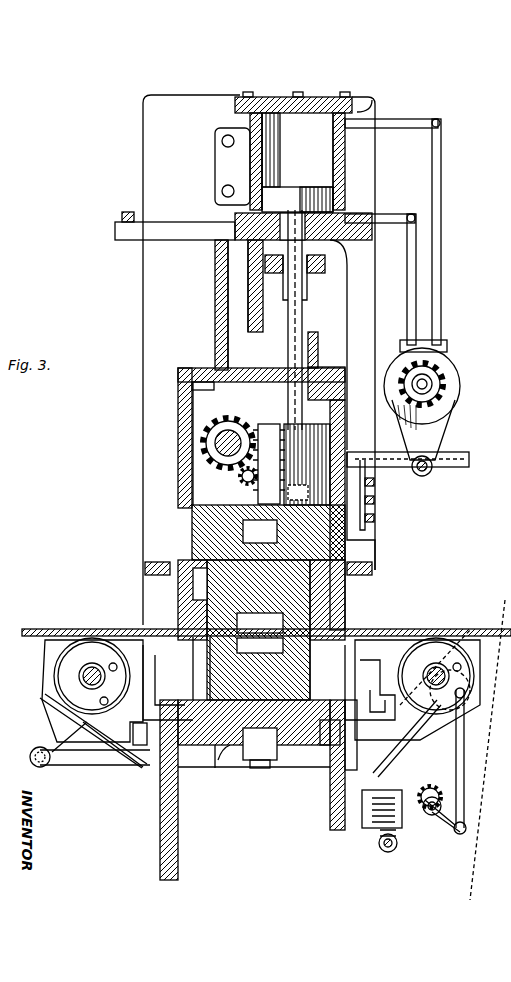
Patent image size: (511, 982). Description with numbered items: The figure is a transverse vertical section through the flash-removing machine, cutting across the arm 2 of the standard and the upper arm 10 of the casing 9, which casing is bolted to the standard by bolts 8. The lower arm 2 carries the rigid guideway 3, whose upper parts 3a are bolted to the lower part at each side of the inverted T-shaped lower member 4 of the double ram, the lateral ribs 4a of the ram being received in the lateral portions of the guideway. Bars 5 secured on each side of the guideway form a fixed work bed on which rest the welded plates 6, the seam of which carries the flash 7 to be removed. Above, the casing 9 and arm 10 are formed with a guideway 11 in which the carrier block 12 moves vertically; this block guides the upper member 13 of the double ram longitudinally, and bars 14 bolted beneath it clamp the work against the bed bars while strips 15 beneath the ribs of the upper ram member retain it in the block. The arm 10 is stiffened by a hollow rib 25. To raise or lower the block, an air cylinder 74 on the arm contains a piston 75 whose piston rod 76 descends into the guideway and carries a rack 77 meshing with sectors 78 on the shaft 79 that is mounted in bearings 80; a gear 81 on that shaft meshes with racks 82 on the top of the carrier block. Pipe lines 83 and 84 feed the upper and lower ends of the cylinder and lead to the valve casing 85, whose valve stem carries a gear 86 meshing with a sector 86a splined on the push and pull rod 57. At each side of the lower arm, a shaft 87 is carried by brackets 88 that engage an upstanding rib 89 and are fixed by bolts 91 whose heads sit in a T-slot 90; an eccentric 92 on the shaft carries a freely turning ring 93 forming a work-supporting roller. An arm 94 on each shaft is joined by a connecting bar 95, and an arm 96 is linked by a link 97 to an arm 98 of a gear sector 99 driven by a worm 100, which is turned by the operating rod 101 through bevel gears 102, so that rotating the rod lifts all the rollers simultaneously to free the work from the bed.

The arm 2 is at (160, 824).
The guideway 3 is at (220, 753).
The upper parts of the guideway 3a is at (178, 668).
The lower member of the double ram 4 is at (268, 727).
The lateral ribs 4a is at (220, 745).
The bars 5 is at (160, 647).
The plates 6 is at (492, 631).
The flash 7 is at (360, 625).
The bolts 8 is at (150, 562).
The casing 9 is at (143, 286).
The arm 10 is at (193, 449).
The guideway 11 is at (190, 492).
The carrier block 12 is at (200, 520).
The upper member of the double ram 13 is at (300, 555).
The bars 14 is at (200, 620).
The strips 15 is at (190, 598).
The hollow rib 25 is at (218, 314).
The push and pull rod 57 is at (431, 477).
The air cylinders 74 is at (345, 165).
The piston 75 is at (297, 199).
The piston rod 76 is at (297, 306).
The rack 77 is at (307, 464).
The sectors 78 is at (238, 485).
The shaft 79 is at (233, 432).
The bearings 80 is at (200, 407).
The gear 81 is at (207, 463).
The racks 82 is at (256, 486).
The pipe line 83 is at (441, 198).
The pipe line 84 is at (410, 268).
The valve casing 85 is at (440, 362).
The gear 86 is at (442, 378).
The sector 86a is at (445, 428).
The shaft 87 is at (79, 676).
The brackets 88 is at (421, 703).
The upstanding rib 89 is at (353, 683).
The T-slot 90 is at (330, 750).
The bolts 91 is at (337, 768).
The eccentric 92 is at (465, 712).
The ring 93 is at (487, 695).
The arm 94 is at (57, 713).
The connecting bar 95 is at (80, 766).
The arm 96 is at (467, 677).
The link 97 is at (464, 742).
The arm 98 is at (442, 810).
The gear sector 99 is at (425, 786).
The worm 100 is at (362, 832).
The operating shaft or rod 101 is at (390, 852).
The bevel gears 102 is at (405, 846).